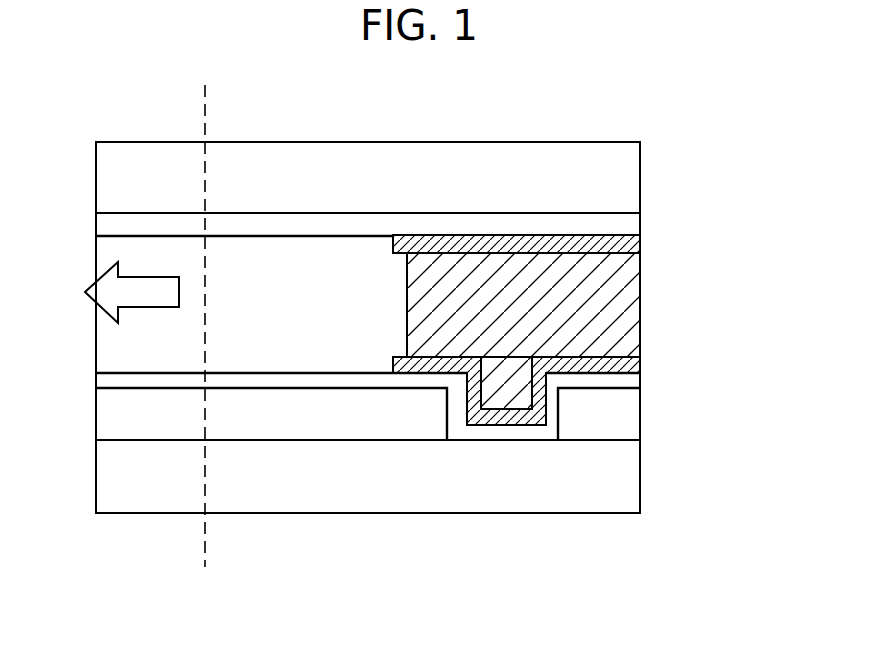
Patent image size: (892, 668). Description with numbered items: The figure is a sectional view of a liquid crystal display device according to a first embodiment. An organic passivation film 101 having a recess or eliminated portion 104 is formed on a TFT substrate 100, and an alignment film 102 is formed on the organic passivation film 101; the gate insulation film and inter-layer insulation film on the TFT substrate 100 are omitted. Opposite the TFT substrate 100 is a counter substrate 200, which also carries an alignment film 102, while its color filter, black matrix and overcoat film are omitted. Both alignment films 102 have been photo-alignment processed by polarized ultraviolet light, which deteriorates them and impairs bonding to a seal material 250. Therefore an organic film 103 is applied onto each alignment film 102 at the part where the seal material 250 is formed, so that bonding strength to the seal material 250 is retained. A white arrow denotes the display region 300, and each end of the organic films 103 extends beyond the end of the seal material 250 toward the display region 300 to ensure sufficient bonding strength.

The TFT substrate 100 is at (630, 482).
The organic passivation film 101 is at (630, 427).
The alignment film 102 is at (340, 229).
The organic film 103 is at (633, 248).
The recess 104 is at (500, 395).
The counter substrate 200 is at (632, 183).
The seal material 250 is at (625, 283).
The display region 300 is at (145, 308).